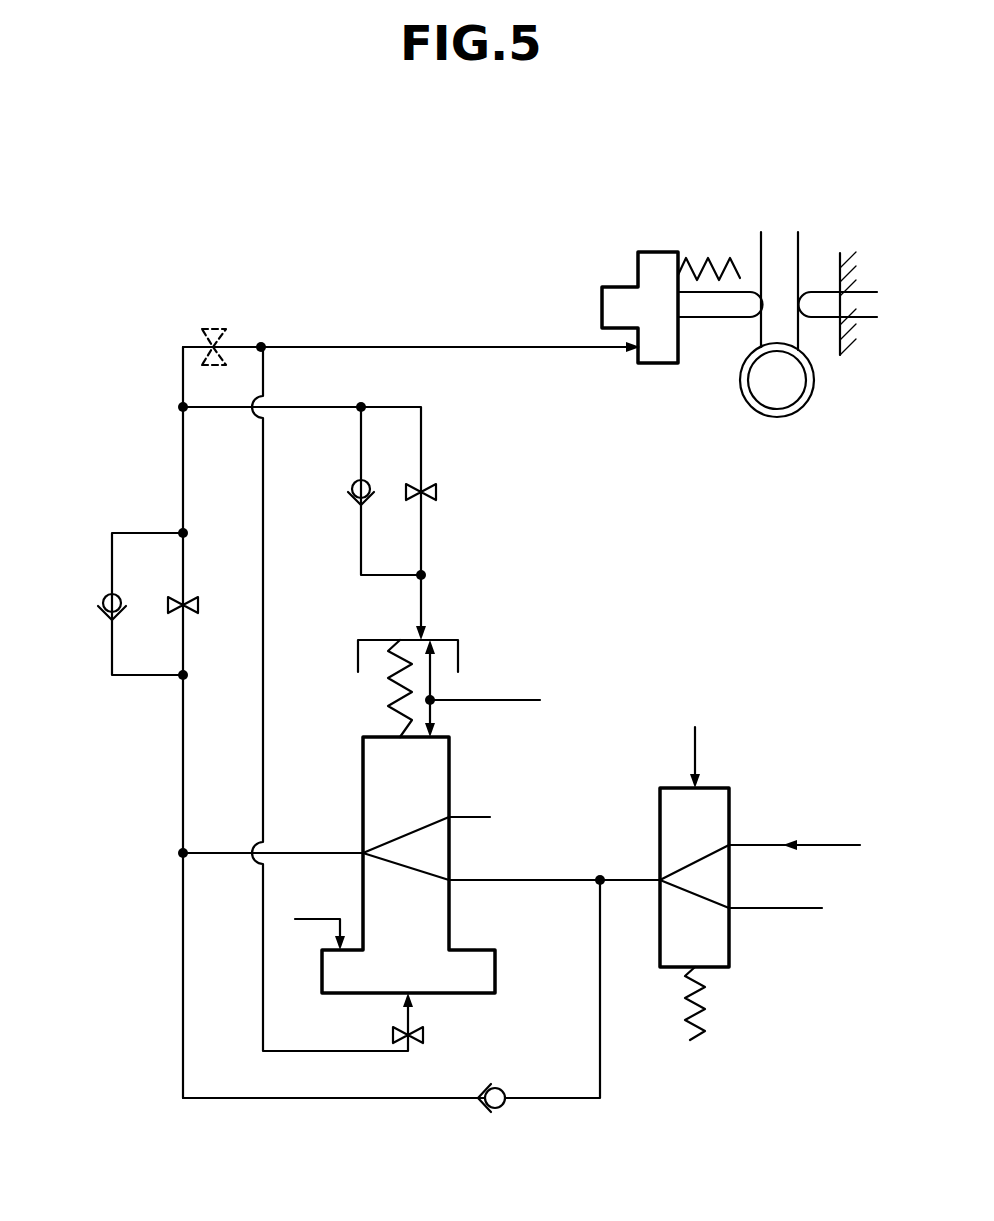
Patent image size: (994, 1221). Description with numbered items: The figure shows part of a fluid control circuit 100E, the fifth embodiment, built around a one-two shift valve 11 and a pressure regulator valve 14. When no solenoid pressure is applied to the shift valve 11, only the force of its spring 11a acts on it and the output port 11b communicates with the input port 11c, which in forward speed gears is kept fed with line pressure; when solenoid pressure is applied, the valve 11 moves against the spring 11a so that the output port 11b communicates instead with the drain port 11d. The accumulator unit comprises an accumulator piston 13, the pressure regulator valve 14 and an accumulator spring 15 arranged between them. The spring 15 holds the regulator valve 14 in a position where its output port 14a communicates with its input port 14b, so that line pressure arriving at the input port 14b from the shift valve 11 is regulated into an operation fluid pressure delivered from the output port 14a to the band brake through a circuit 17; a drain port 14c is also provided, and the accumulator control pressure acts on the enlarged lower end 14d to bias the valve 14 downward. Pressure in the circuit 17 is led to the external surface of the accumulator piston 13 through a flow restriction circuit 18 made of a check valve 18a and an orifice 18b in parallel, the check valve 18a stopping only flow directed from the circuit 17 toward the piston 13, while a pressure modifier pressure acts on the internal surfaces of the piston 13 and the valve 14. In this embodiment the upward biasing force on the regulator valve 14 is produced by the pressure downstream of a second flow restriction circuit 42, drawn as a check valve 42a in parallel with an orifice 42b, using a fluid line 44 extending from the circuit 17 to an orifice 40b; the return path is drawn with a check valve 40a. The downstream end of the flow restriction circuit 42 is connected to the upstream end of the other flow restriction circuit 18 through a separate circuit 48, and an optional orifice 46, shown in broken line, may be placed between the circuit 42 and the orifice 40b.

The 1–2 shift valve 11 is at (722, 877).
The spring 11a is at (705, 1000).
The output port 11b is at (660, 880).
The input port 11c is at (729, 845).
The drain port 11d is at (729, 908).
The accumulator piston 13 is at (450, 640).
The pressure regulator valve 14 is at (419, 879).
The output port 14a is at (363, 853).
The input port 14b is at (449, 880).
The drain port 14c is at (449, 817).
The enlarged lower end 14d is at (322, 945).
The accumulator spring 15 is at (390, 672).
The circuit 17 is at (322, 347).
The flow restriction circuit 18 is at (473, 484).
The check valve 18a is at (368, 487).
The orifice 18b is at (438, 492).
The check valve 40a is at (503, 1105).
The orifice 40b is at (423, 1035).
The flow restriction circuit 42 is at (125, 552).
The check valve 42a is at (103, 598).
The orifice 42b is at (170, 598).
The fluid line 44 is at (262, 635).
The orifice 46 is at (216, 327).
The separate circuit 48 is at (322, 407).
The fluid control circuit 100E is at (739, 315).